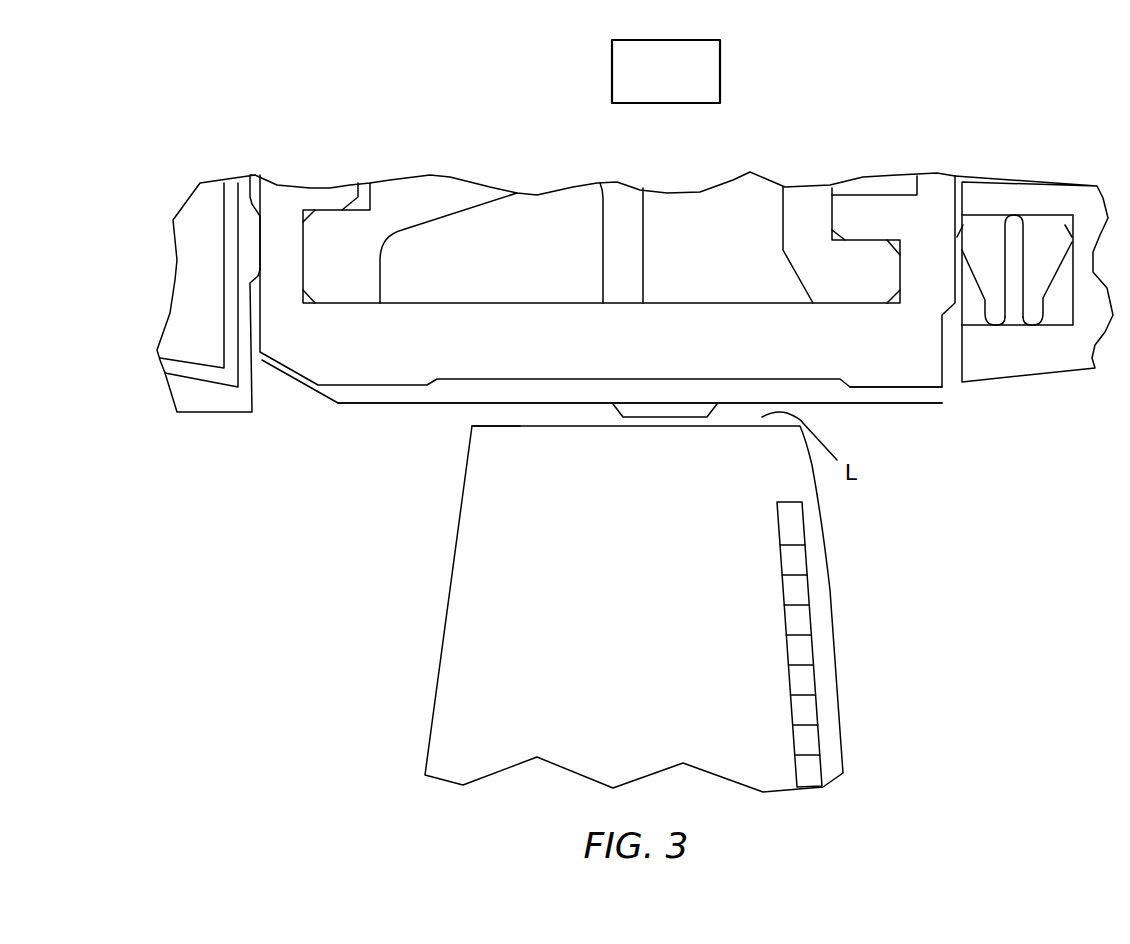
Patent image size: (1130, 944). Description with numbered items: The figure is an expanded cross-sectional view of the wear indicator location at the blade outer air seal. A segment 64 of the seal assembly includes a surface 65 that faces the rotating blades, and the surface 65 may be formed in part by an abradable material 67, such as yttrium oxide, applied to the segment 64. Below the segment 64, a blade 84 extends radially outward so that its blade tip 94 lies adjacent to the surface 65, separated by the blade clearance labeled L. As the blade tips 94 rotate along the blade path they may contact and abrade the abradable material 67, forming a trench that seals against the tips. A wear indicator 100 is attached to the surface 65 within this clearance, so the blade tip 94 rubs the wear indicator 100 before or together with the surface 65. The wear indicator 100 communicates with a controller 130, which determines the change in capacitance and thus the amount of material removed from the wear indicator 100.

The segment 64 is at (859, 357).
The surface 65 is at (837, 405).
The abradable material 67 is at (913, 393).
The blade 84 is at (576, 643).
The blade tip 94 is at (513, 426).
The wear indicator 100 is at (693, 408).
The controller 130 is at (665, 403).